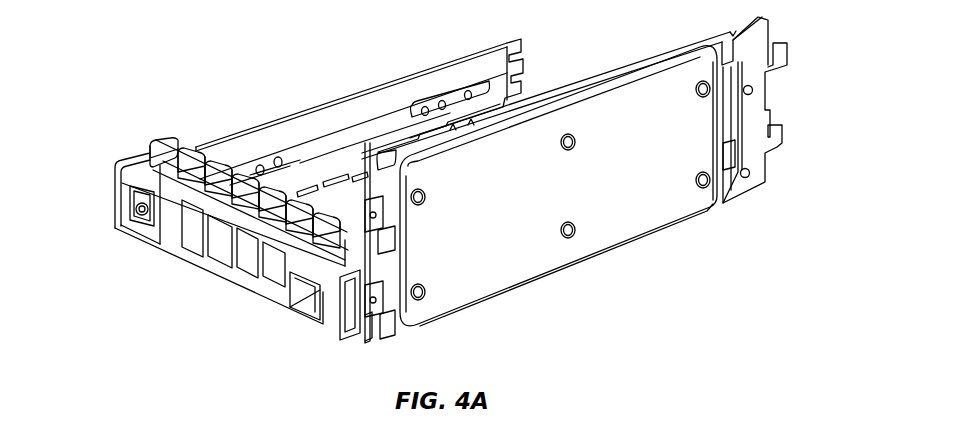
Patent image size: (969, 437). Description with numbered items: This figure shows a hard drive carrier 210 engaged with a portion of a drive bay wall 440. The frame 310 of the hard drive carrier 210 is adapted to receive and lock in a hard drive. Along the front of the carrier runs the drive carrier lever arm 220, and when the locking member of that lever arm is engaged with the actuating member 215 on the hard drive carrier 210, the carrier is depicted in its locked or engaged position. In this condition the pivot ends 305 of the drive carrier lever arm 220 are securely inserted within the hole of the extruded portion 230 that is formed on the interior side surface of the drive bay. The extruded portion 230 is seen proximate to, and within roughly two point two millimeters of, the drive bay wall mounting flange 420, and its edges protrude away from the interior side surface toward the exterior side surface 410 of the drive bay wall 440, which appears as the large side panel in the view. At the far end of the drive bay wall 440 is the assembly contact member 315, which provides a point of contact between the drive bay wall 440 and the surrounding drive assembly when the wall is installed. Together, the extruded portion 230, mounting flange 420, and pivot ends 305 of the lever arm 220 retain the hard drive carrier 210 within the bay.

The hard drive carrier 210 is at (312, 107).
The actuating member 215 is at (128, 212).
The drive carrier lever arm 220 is at (227, 273).
The extruded portion 230 is at (400, 250).
The pivot ends 305 is at (300, 297).
The frame 310 is at (512, 100).
The assembly contact member 315 is at (785, 40).
The exterior side surface 410 is at (580, 202).
The drive bay wall mounting flange 420 is at (350, 312).
The drive bay wall 440 is at (700, 36).